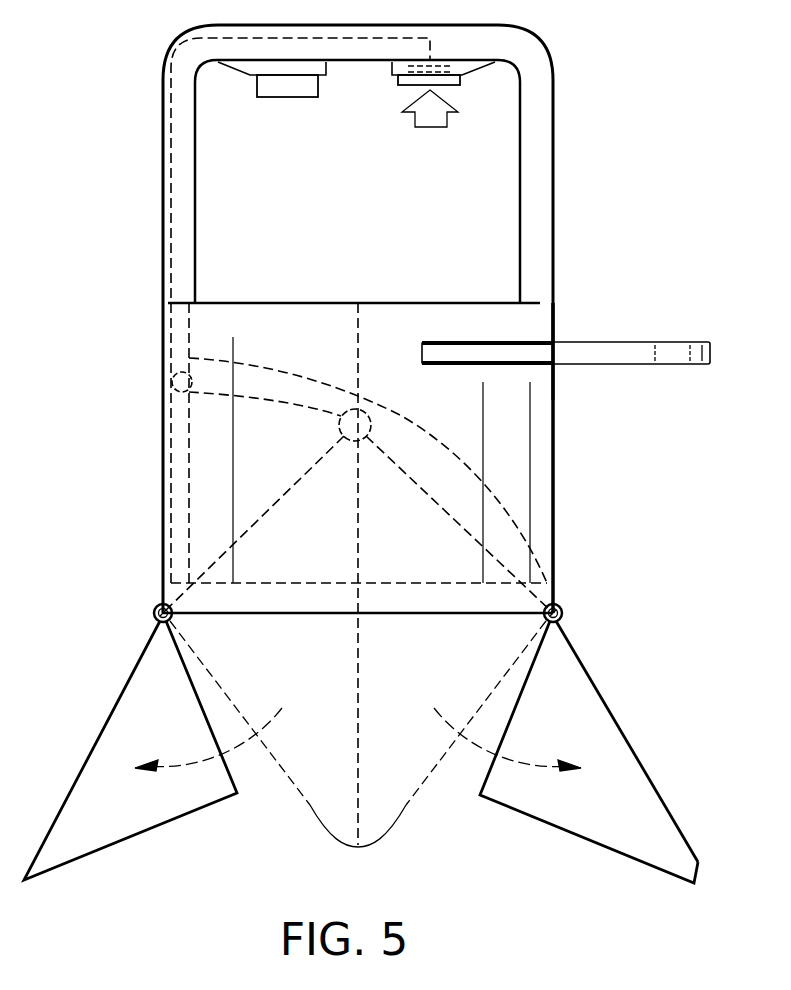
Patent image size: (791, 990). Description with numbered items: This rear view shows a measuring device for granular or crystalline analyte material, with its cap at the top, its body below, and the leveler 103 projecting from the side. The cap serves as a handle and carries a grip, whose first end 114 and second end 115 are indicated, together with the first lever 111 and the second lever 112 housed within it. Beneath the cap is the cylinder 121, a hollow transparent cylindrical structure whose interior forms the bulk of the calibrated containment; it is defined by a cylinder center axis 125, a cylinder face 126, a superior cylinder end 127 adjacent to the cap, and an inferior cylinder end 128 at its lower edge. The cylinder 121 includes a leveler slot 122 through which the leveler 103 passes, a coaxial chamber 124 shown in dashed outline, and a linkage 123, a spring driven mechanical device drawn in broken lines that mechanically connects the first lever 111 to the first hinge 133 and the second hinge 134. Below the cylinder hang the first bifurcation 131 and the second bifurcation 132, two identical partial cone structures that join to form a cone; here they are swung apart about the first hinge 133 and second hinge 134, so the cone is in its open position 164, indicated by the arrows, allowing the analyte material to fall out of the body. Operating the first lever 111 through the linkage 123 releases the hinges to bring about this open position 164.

The leveler 103 is at (697, 345).
The first lever 111 is at (294, 97).
The second lever 112 is at (462, 86).
The first end 114 is at (200, 283).
The second end 115 is at (540, 283).
The cylinder 121 is at (555, 483).
The leveler slot 122 is at (540, 325).
The linkage 123 is at (262, 402).
The coaxial chamber 124 is at (175, 502).
The cylinder center axis 125 is at (362, 347).
The cylinder face 126 is at (518, 437).
The superior cylinder end 127 is at (328, 303).
The inferior cylinder end 128 is at (297, 615).
The first bifurcation 131 is at (130, 818).
The second bifurcation 132 is at (614, 777).
The first hinge 133 is at (152, 613).
The second hinge 134 is at (564, 611).
The open position 164 is at (648, 757).